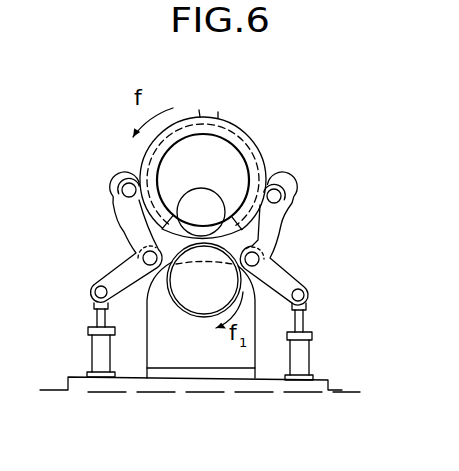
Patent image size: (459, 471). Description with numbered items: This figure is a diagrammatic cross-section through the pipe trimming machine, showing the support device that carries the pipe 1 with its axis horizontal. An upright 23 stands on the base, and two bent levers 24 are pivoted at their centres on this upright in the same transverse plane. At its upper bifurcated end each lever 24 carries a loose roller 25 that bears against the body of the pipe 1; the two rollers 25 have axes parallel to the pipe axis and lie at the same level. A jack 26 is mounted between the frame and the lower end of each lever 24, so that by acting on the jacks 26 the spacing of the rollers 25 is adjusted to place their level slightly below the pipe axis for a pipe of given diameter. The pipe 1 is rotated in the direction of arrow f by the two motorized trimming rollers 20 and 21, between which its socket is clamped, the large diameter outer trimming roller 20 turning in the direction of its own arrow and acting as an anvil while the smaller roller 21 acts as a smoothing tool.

The pipe 1 is at (252, 135).
The outer trimming roller 20 is at (197, 293).
The trimming roller 21 is at (212, 211).
The upright 23 is at (330, 386).
The bent lever 24 is at (277, 233).
The loose roller 25 is at (293, 184).
The jack 26 is at (303, 351).